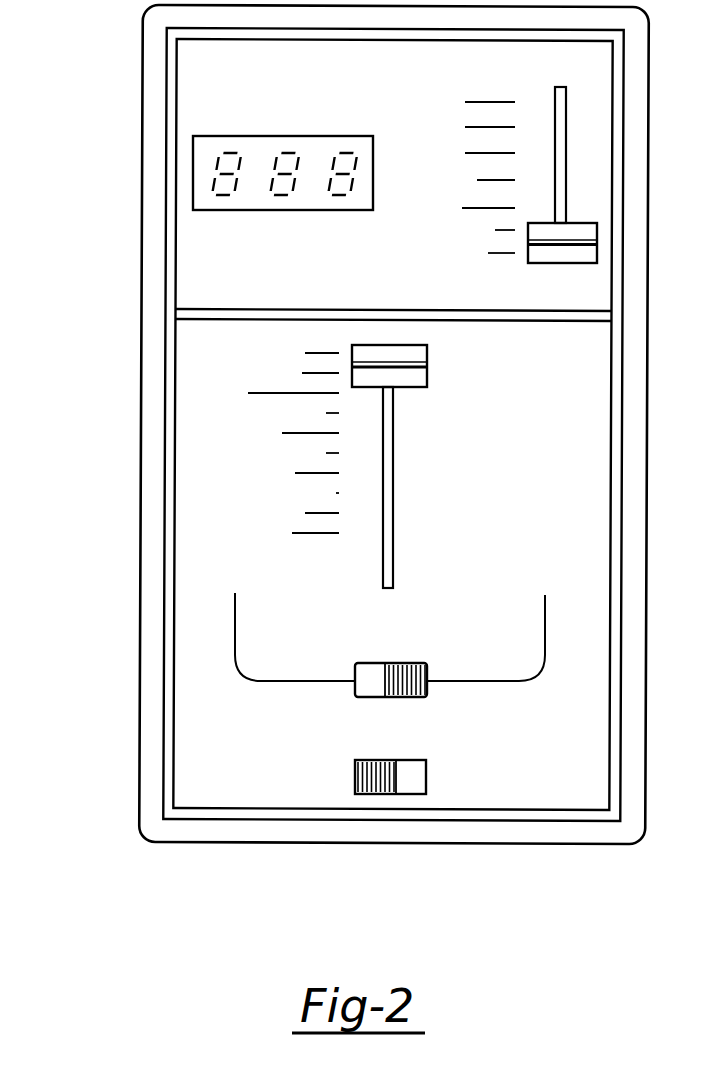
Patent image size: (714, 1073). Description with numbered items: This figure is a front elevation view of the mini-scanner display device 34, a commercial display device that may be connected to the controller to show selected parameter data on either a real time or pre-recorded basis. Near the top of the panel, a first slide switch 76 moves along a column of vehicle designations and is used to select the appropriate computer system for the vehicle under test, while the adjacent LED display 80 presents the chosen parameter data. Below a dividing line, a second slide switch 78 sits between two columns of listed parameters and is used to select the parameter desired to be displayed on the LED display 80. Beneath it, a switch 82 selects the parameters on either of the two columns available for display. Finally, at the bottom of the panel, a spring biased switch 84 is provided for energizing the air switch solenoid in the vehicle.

The mini-scanner display device 34 is at (106, 672).
The first slide switch 76 is at (553, 254).
The second slide switch 78 is at (412, 380).
The LED display 80 is at (274, 210).
The switch 82 is at (403, 665).
The spring biased switch 84 is at (358, 773).